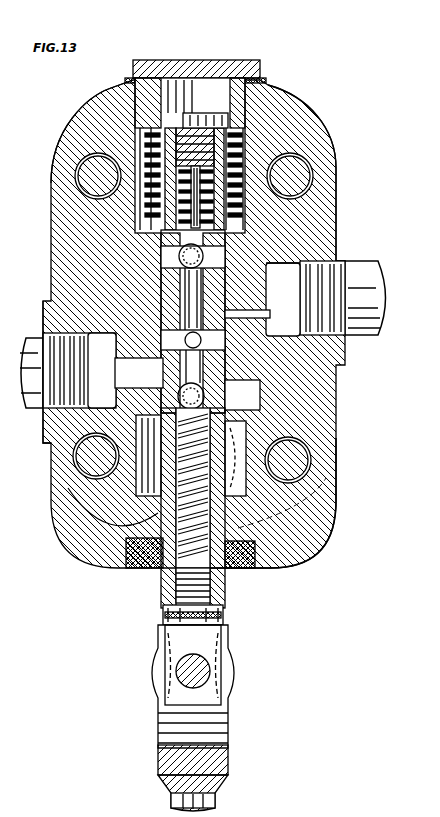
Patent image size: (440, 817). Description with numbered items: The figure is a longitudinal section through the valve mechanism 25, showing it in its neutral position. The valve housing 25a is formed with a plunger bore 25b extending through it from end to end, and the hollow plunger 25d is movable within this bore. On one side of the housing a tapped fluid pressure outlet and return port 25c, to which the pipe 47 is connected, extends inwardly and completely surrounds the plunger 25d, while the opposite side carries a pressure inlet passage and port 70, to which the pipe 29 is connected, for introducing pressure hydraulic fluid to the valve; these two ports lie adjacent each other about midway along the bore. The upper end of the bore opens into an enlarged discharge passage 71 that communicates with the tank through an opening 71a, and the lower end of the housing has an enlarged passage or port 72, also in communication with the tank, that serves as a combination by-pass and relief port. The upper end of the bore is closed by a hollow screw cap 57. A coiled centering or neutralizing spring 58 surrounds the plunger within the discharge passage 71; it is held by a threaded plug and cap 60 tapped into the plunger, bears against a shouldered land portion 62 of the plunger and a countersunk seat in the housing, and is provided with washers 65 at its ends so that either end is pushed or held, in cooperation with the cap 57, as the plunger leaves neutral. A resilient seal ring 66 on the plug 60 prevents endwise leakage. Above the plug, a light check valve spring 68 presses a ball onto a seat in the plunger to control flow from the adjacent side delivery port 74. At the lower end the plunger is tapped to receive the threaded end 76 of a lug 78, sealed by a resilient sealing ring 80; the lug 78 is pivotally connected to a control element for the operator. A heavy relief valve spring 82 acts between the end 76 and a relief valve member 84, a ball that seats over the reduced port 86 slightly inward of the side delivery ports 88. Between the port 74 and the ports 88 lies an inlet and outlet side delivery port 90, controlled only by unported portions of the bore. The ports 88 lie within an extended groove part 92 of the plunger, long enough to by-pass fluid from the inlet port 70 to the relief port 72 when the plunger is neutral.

The valve mechanism 25 is at (203, 324).
The valve housing 25a is at (320, 497).
The plunger bore 25b is at (122, 553).
The fluid pressure outlet and return port 25c is at (313, 248).
The plunger 25d is at (218, 608).
The pipe 29 is at (25, 328).
The pipe 47 is at (365, 300).
The hollow screw cap 57 is at (253, 58).
The centering or neutralizing spring 58 is at (150, 205).
The threaded plug and cap 60 is at (188, 107).
The shouldered land portion 62 is at (328, 195).
The washers 65 is at (102, 90).
The resilient seal ring 66 is at (198, 108).
The check valve spring 68 is at (157, 170).
The pressure inlet passage and port 70 is at (38, 402).
The discharge passage 71 is at (233, 133).
The opening 71a is at (220, 163).
The passage or port 72 is at (125, 495).
The side delivery port 74 is at (160, 250).
The threaded end 76 is at (153, 597).
The lug 78 is at (217, 620).
The resilient sealing ring 80 is at (155, 610).
The relief valve spring 82 is at (210, 592).
The relief valve member 84 is at (165, 377).
The reduced port 86 is at (123, 352).
The side delivery ports 88 is at (255, 387).
The inlet and outlet side delivery port 90 is at (262, 299).
The extended groove part 92 is at (191, 455).